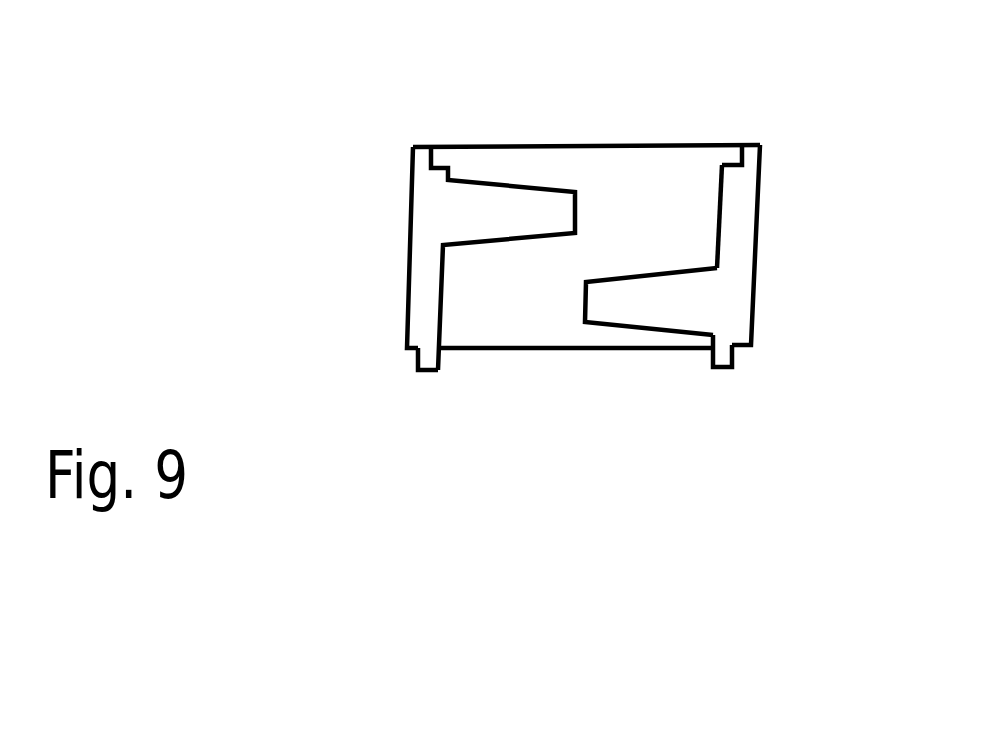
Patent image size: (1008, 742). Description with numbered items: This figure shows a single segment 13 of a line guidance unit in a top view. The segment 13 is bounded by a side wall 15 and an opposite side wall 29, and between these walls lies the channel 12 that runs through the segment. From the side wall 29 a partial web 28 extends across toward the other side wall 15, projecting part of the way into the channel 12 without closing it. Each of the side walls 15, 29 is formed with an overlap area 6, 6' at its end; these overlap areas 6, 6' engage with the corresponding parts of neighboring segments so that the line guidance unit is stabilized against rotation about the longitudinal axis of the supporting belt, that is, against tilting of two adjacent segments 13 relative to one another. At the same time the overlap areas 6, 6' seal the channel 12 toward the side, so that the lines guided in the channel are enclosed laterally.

The overlap area 6 is at (433, 414).
The overlap area 6' is at (768, 92).
The channel 12 is at (661, 233).
The segment 13 is at (753, 380).
The side wall 15 is at (423, 307).
The partial web 28 is at (635, 300).
The side wall 29 is at (737, 247).